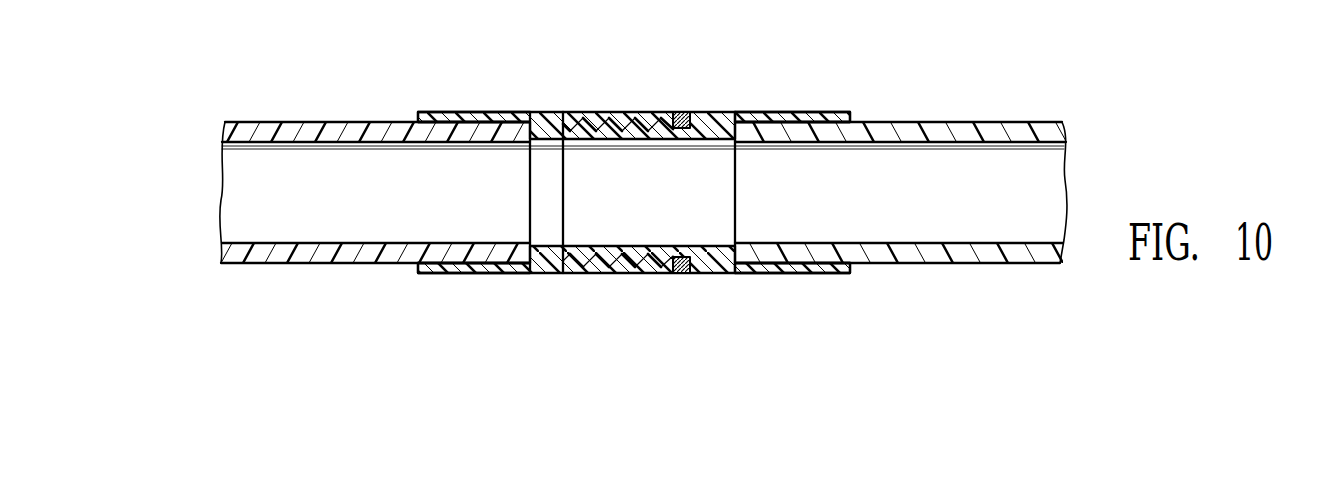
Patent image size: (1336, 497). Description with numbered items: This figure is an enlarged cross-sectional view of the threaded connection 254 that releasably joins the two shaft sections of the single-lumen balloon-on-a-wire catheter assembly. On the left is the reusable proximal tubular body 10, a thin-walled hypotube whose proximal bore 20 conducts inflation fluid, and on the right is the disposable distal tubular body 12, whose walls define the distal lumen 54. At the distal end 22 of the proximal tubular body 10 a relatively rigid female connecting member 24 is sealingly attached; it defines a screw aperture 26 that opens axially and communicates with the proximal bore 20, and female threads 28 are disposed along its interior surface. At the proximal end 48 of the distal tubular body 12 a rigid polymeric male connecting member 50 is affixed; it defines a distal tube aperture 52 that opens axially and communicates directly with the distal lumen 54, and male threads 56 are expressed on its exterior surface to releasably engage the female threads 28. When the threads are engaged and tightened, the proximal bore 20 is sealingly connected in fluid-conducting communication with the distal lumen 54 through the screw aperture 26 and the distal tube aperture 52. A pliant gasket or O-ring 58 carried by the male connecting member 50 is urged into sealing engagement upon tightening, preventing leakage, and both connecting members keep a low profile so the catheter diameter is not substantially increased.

The proximal tubular body 10 is at (372, 193).
The distal tubular body 12 is at (908, 192).
The proximal bore 20 is at (243, 202).
The distal end 22 is at (450, 98).
The female connecting member 24 is at (631, 188).
The connection 254 is at (631, 167).
The screw aperture 26 is at (702, 195).
The female threads 28 is at (628, 252).
The proximal end 48 is at (772, 96).
The male connecting member 50 is at (782, 273).
The distal tube aperture 52 is at (572, 195).
The distal lumen 54 is at (1033, 185).
The male threads 56 is at (618, 258).
The gasket or O-ring 58 is at (680, 113).